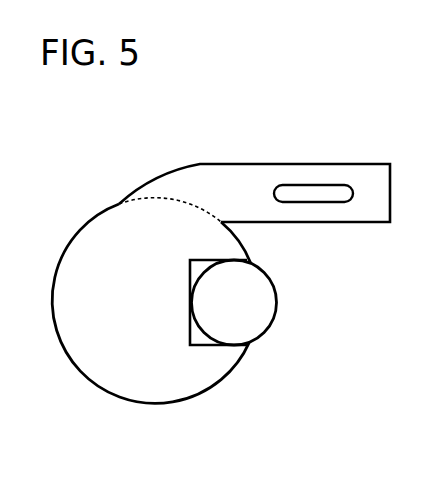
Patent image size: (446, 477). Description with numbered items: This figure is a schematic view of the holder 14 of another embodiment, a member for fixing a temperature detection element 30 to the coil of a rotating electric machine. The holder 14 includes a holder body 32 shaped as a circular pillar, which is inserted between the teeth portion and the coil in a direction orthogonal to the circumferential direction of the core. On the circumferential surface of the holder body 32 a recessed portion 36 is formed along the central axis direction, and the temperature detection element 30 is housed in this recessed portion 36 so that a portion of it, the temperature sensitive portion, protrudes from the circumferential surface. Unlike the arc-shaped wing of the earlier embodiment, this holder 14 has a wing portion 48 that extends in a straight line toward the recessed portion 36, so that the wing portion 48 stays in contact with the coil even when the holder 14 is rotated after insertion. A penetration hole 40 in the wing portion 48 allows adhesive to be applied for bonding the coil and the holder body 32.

The holder 14 is at (231, 253).
The temperature detection element 30 is at (267, 306).
The holder body 32 is at (113, 373).
The recessed portion 36 is at (190, 333).
The penetration hole 40 is at (328, 192).
The wing portion 48 is at (254, 192).